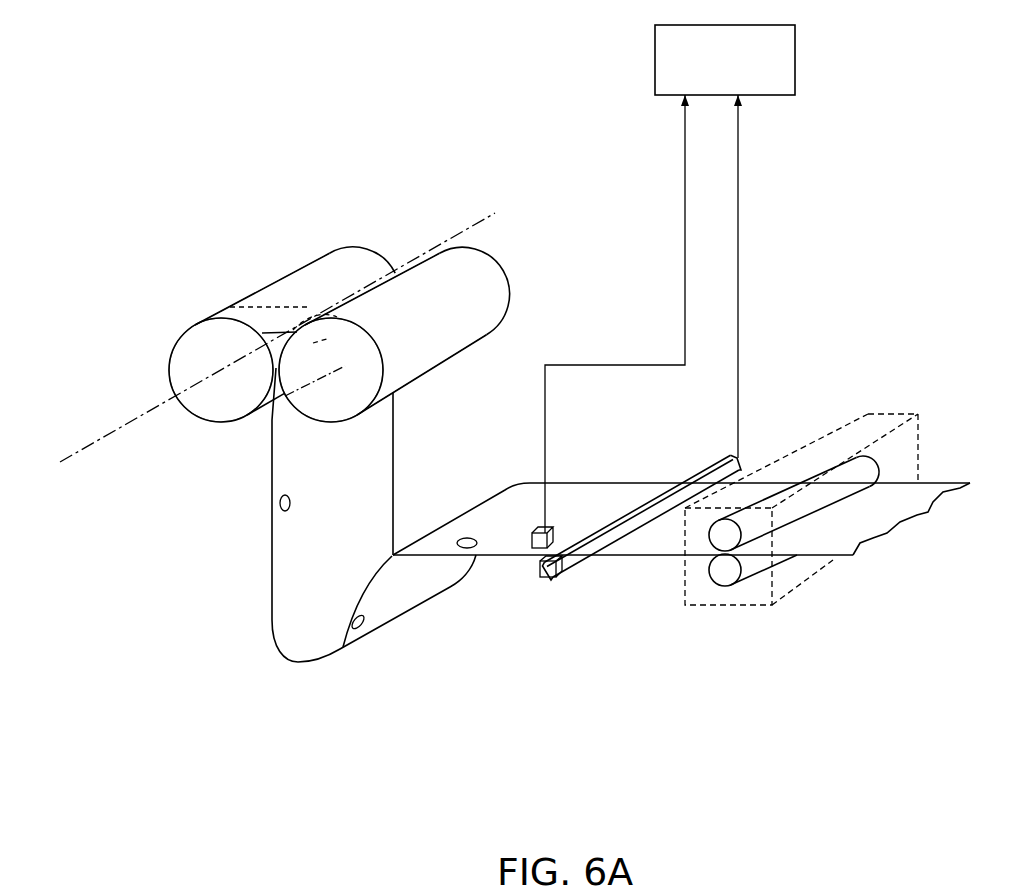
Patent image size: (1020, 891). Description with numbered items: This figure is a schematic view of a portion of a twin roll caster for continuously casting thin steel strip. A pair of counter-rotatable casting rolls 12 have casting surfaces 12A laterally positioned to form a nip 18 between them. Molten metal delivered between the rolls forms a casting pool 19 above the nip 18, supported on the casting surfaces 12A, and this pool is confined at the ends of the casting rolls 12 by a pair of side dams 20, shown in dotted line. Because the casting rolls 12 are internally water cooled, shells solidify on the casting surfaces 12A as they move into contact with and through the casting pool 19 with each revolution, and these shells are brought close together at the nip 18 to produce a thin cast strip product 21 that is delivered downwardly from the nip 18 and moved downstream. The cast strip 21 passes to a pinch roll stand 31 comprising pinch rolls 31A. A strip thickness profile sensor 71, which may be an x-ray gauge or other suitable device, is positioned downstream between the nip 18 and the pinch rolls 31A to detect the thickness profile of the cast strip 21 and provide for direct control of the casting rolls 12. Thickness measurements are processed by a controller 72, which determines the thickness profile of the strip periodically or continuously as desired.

The casting rolls 12 is at (211, 410).
The casting surfaces 12A is at (273, 293).
The nip 18 is at (288, 363).
The casting pool 19 is at (390, 272).
The side dams 20 is at (257, 340).
The thin cast strip product 21 is at (272, 588).
The pinch roll stand 31 is at (818, 437).
The pinch rolls 31A is at (877, 458).
The strip thickness profile sensor 71 is at (544, 580).
The controller 72 is at (795, 60).